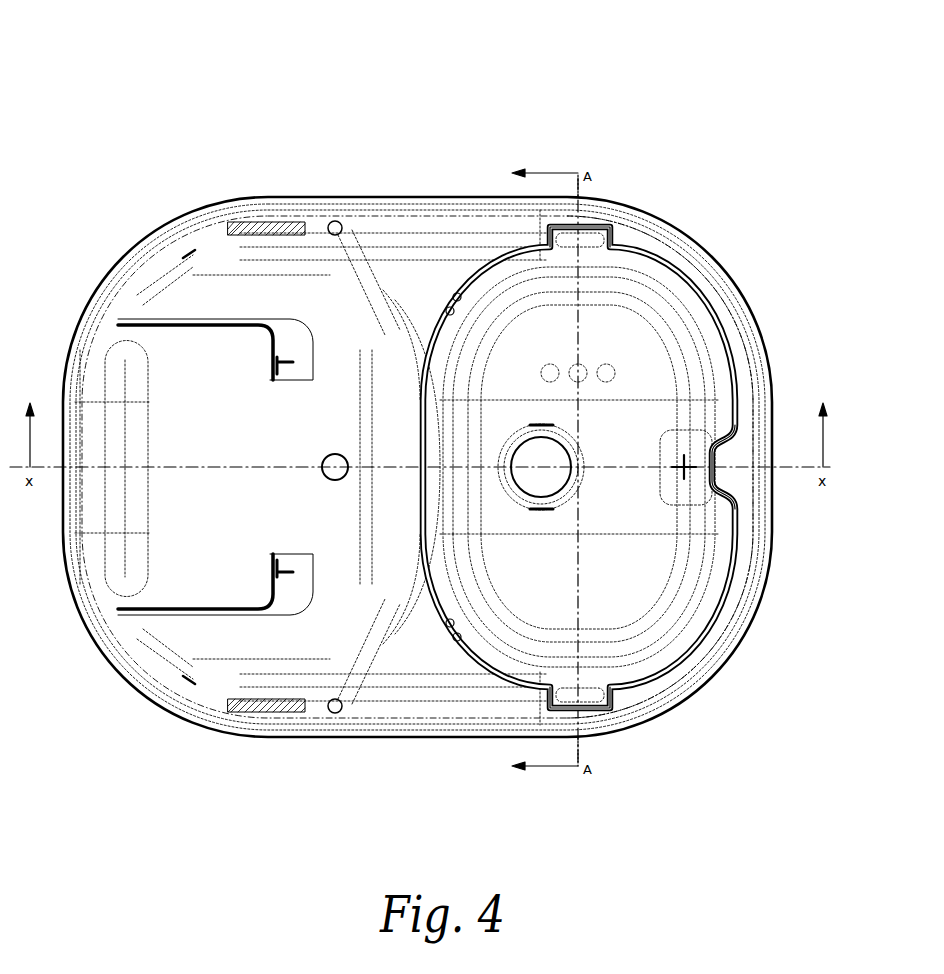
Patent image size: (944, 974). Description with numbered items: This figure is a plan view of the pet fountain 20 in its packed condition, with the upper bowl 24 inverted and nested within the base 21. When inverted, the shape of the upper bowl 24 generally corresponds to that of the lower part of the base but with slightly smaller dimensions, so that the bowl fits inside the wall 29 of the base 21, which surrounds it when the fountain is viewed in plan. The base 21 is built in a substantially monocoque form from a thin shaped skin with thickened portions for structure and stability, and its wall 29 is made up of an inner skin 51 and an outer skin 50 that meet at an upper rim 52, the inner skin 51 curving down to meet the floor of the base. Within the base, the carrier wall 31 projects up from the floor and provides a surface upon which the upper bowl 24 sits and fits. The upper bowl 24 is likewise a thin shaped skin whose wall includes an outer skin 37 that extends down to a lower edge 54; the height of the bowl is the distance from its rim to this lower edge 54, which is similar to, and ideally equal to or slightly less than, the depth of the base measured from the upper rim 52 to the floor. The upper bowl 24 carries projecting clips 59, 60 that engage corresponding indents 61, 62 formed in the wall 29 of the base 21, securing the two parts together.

The pet fountain 20 is at (460, 137).
The base 21 is at (296, 207).
The upper bowl 24 is at (645, 640).
The wall 29 is at (651, 232).
The carrier wall 31 is at (380, 583).
The outer skin 37 is at (717, 610).
The outer skin 50 is at (708, 252).
The inner skin 51 is at (737, 397).
The upper rim 52 is at (737, 323).
The lower edge 54 is at (466, 645).
The projecting clip 59 is at (247, 707).
The projecting clip 60 is at (237, 220).
The indent 61 is at (597, 222).
The indent 62 is at (590, 708).